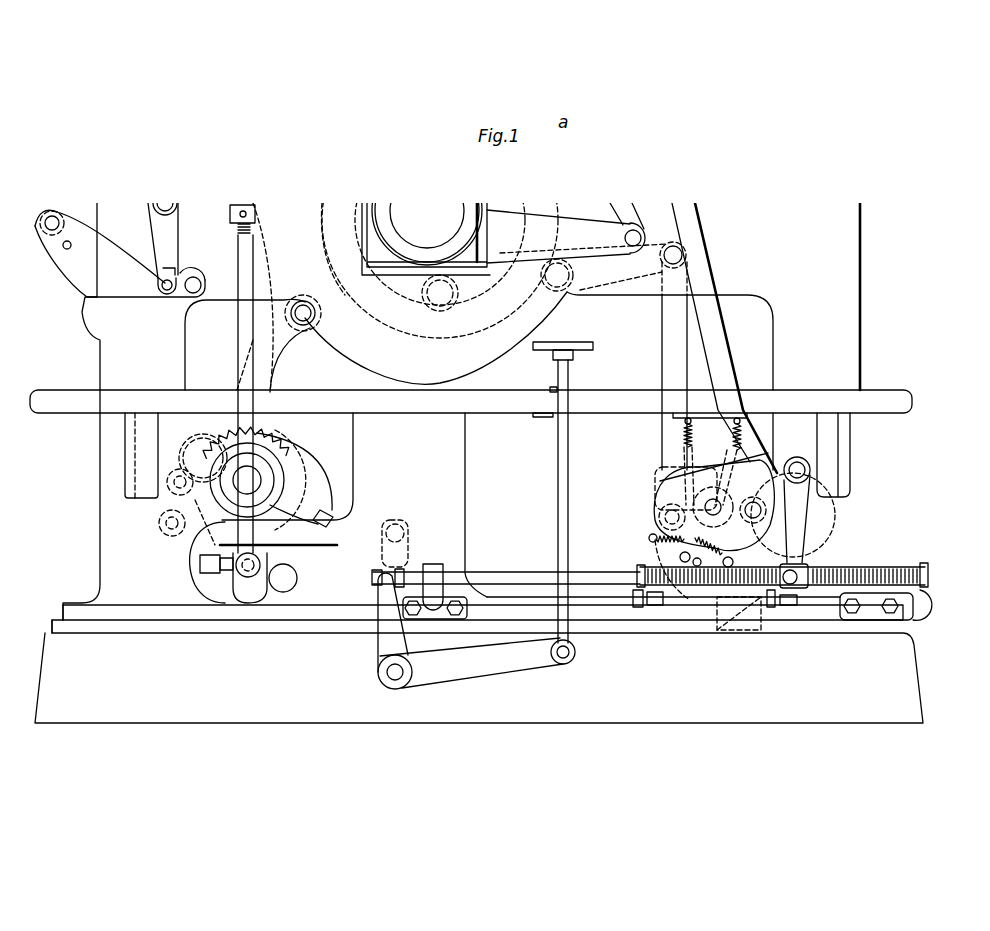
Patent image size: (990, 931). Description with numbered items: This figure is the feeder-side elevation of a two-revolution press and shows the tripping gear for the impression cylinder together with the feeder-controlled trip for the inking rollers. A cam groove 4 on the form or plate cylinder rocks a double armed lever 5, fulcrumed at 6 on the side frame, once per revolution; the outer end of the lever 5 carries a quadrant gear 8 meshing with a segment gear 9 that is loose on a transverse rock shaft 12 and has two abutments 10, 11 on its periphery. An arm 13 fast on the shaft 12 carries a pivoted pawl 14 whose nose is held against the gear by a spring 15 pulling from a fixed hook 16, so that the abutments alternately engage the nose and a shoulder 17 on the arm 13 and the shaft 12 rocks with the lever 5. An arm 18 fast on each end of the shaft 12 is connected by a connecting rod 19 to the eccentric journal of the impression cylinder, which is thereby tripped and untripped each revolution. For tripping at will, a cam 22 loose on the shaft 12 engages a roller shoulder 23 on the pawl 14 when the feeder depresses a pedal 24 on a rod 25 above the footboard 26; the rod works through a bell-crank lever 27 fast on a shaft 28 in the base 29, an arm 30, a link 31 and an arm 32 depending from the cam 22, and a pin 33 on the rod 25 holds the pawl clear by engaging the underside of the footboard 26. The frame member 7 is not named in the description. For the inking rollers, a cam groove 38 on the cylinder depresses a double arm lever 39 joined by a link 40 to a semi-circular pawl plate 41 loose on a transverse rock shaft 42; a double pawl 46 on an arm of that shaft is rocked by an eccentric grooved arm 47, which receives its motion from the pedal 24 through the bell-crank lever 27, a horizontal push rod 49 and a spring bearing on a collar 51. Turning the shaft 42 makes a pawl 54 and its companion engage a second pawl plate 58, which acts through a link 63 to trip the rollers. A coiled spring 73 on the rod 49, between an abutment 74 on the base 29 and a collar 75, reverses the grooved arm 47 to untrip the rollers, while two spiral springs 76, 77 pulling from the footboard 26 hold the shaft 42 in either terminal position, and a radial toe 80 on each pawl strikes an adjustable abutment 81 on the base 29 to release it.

The cam groove 4 is at (487, 327).
The double armed lever 5 is at (300, 270).
The fulcrum 6 is at (307, 337).
The frame housing 7 is at (354, 505).
The quadrant gear 8 is at (280, 430).
The segment gear 9 is at (283, 450).
The untripping abutment 10 is at (177, 472).
The abutment 11 is at (220, 543).
The transverse rock shaft 12 is at (255, 480).
The arm 13 is at (177, 495).
The pawl 14 is at (170, 488).
The spring 15 is at (160, 453).
The hook 16 is at (220, 435).
The shoulder 17 is at (217, 520).
The arm 18 is at (200, 565).
The connecting rod 19 is at (238, 334).
The cam 22 is at (102, 430).
The shoulder 23 is at (160, 483).
The pedal 24 is at (593, 345).
The rod 25 is at (568, 382).
The footboard 26 is at (790, 395).
The bell-crank lever 27 is at (483, 675).
The shaft 28 is at (385, 676).
The base 29 is at (250, 687).
The arm 30 is at (408, 562).
The link 31 is at (327, 545).
The arm 32 is at (290, 552).
The pin 33 is at (553, 387).
The cam groove 38 is at (383, 308).
The double arm lever 39 is at (612, 292).
The link 40 is at (672, 313).
The semi-circular pawl plate 41 is at (797, 457).
The transverse rock shaft 42 is at (713, 499).
The double pawl 46 is at (808, 567).
The eccentric grooved arm 47 is at (835, 508).
The horizontal push rod 49 is at (510, 577).
The collar 51 is at (637, 570).
The pawl 54 is at (652, 538).
The second pawl plate 58 is at (663, 483).
The link 63 is at (702, 255).
The coiled spring 73 is at (877, 567).
The abutment 74 is at (923, 567).
The collar 75 is at (802, 587).
The spiral spring 76 is at (688, 438).
The spiral spring 77 is at (733, 437).
The radial toe 80 is at (670, 590).
The abutment 81 is at (660, 607).